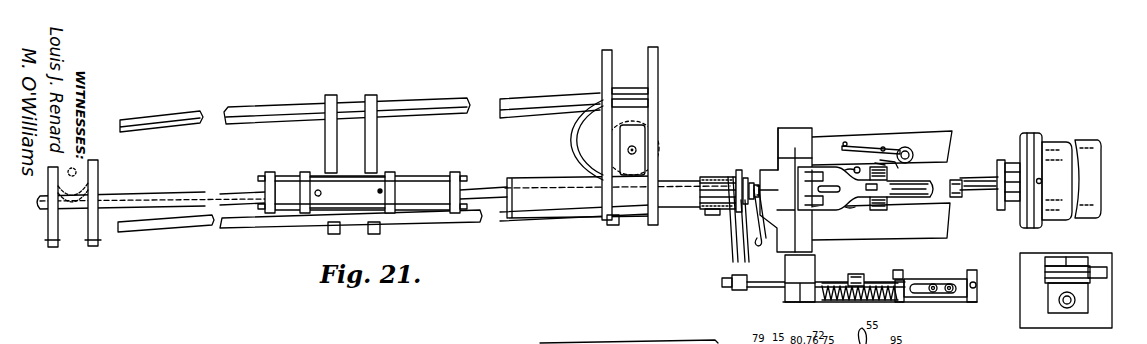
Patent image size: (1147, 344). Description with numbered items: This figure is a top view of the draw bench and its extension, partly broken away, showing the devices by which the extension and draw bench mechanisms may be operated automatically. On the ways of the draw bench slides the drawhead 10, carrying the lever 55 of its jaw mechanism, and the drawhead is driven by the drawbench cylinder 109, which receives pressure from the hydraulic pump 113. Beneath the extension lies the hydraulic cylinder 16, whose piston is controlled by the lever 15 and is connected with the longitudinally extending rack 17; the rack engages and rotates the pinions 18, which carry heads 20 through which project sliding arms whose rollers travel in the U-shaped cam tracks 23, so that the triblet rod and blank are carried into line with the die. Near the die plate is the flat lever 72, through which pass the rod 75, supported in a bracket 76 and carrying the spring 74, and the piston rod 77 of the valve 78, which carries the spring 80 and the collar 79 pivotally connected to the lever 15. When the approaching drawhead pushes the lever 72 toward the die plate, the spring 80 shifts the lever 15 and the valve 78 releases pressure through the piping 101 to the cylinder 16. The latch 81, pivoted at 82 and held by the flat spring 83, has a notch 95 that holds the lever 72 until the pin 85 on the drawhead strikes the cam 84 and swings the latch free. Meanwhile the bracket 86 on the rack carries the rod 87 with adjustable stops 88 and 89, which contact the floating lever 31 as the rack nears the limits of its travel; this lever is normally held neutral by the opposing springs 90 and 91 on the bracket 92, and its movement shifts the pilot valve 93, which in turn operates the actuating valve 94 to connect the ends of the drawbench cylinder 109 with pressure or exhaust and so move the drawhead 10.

The drawhead 10 is at (884, 204).
The lever 15 is at (760, 246).
The hydraulic cylinder 16 is at (363, 185).
The rack 17 is at (188, 197).
The pinions 18 is at (100, 181).
The heads 20 is at (640, 135).
The cam tracks 23 is at (576, 156).
The lever 31 is at (862, 277).
The lever 55 is at (840, 189).
The flat lever 72 is at (786, 162).
The spring 74 is at (780, 160).
The rod 75 is at (801, 160).
The bracket 76 is at (776, 160).
The piston rod 77 is at (747, 171).
The valve 78 is at (700, 195).
The collar 79 is at (753, 170).
The spring 80 is at (772, 175).
The latch 81 is at (893, 166).
The pivot 82 is at (914, 153).
The flat spring 83 is at (866, 146).
The cam 84 is at (884, 173).
The pin 85 is at (855, 167).
The bracket 86 is at (744, 291).
The rod 87 is at (788, 282).
The stop 88 is at (855, 274).
The stop 89 is at (897, 270).
The spring 90 is at (838, 299).
The spring 91 is at (868, 300).
The bracket 92 is at (803, 299).
The pilot valve 93 is at (940, 291).
The actuating valve 94 is at (930, 277).
The notch 95 is at (796, 162).
The piping 101 is at (508, 343).
The drawbench cylinder 109 is at (1094, 153).
The hydraulic pump 113 is at (1086, 298).